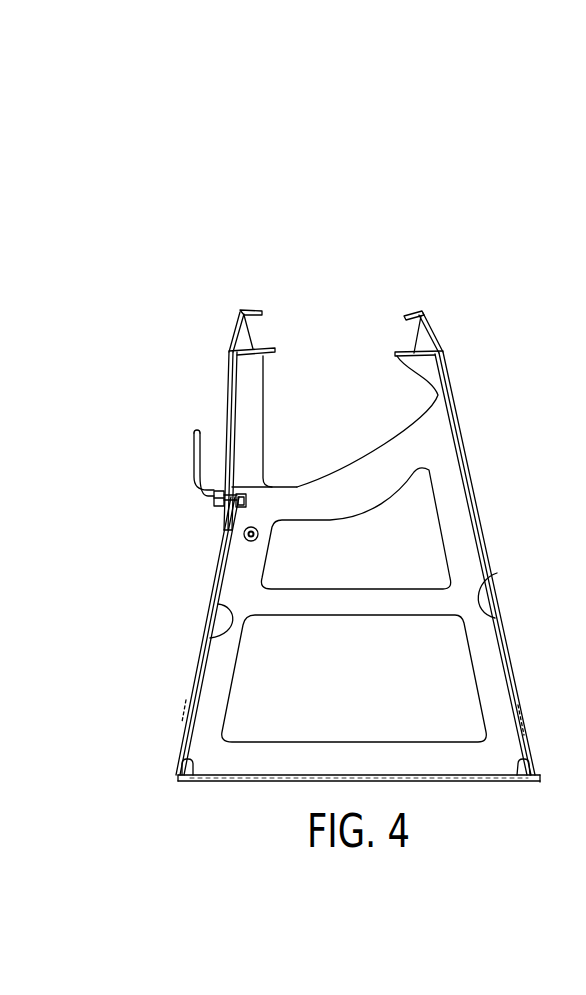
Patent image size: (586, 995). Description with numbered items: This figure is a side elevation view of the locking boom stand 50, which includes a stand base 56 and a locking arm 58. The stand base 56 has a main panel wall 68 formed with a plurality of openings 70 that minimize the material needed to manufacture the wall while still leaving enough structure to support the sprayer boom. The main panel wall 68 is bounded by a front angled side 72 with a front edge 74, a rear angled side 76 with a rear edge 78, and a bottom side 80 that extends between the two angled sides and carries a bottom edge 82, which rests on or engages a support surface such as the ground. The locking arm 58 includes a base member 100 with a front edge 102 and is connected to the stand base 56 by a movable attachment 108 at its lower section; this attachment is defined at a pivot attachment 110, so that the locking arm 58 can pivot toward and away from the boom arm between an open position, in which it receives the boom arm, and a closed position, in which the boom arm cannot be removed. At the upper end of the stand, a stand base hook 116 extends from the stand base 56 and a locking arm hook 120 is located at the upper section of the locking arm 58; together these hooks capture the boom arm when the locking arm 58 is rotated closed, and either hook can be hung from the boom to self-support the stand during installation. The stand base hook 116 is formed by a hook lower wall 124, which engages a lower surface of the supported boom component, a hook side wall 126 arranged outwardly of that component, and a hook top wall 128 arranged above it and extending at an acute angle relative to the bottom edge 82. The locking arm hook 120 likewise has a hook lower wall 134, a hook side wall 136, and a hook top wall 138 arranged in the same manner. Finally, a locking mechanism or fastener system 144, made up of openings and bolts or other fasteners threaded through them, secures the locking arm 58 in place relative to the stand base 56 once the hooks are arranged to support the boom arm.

The locking boom stand 50 is at (165, 742).
The stand base 56 is at (186, 648).
The locking arm 58 is at (222, 380).
The main panel wall 68 is at (215, 693).
The openings 70 is at (280, 723).
The front angled side 72 is at (237, 587).
The front edge 74 is at (218, 604).
The rear angled side 76 is at (460, 522).
The rear edge 78 is at (497, 573).
The bottom side 80 is at (463, 760).
The bottom edge 82 is at (413, 775).
The base member 100 is at (255, 388).
The front edge 102 is at (237, 424).
The movable attachment 108 is at (266, 522).
The pivot attachment 110 is at (258, 538).
The stand base hook 116 is at (389, 324).
The locking arm hook 120 is at (276, 325).
The hook lower wall 124 is at (424, 316).
The hook side wall 126 is at (433, 335).
The hook top wall 128 is at (412, 316).
The hook lower wall 134 is at (238, 307).
The hook side wall 136 is at (233, 333).
The hook top wall 138 is at (256, 310).
The locking mechanism or fastener system 144 is at (184, 490).